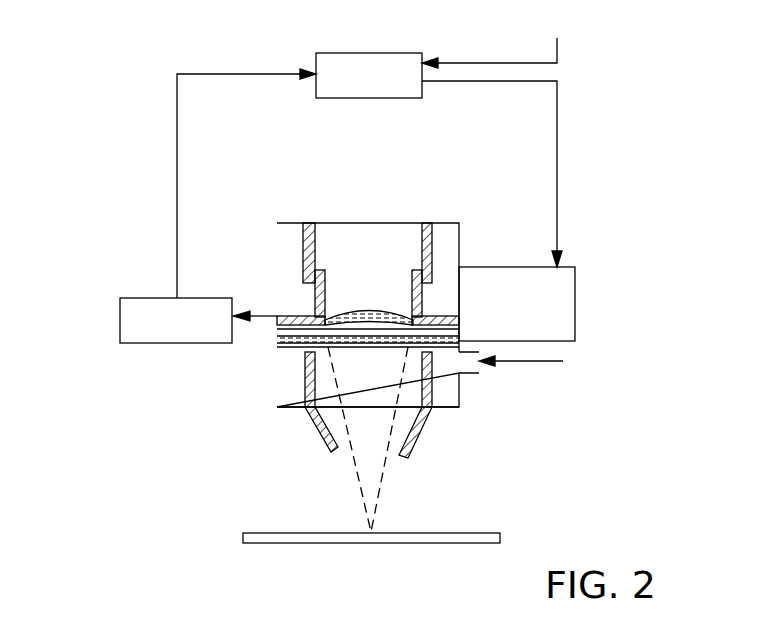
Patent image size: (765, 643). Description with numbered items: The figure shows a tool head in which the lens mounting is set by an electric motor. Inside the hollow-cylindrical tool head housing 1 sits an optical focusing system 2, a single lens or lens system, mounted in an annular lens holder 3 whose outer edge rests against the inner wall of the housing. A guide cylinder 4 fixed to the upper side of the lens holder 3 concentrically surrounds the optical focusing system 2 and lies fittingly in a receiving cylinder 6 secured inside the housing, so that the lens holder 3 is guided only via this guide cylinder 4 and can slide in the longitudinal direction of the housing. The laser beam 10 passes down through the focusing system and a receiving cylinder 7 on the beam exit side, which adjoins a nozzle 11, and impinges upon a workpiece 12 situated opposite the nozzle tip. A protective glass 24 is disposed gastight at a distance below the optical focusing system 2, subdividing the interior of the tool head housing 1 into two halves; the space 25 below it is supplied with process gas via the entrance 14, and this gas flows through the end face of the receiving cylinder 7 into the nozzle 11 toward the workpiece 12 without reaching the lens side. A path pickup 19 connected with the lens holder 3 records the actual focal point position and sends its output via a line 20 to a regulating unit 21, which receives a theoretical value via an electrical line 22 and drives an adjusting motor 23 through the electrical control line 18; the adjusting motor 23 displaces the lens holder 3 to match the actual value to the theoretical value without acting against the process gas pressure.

The tool head housing 1 is at (287, 223).
The optical focusing system 2 is at (357, 305).
The lens holder 3 is at (277, 320).
The guide cylinder 4 is at (412, 270).
The receiving cylinder 6 is at (432, 250).
The receiving cylinder 7 is at (455, 407).
The laser beam 10 is at (387, 473).
The nozzle 11 is at (318, 437).
The workpiece 12 is at (243, 537).
The entrance 14 is at (467, 358).
The electrical control line 18 is at (557, 202).
The path pickup 19 is at (120, 328).
The line 20 is at (177, 175).
The regulating unit 21 is at (345, 53).
The electrical line 22 is at (485, 63).
The adjusting motor 23 is at (560, 312).
The protective glass 24 is at (380, 348).
The space 25 is at (297, 385).